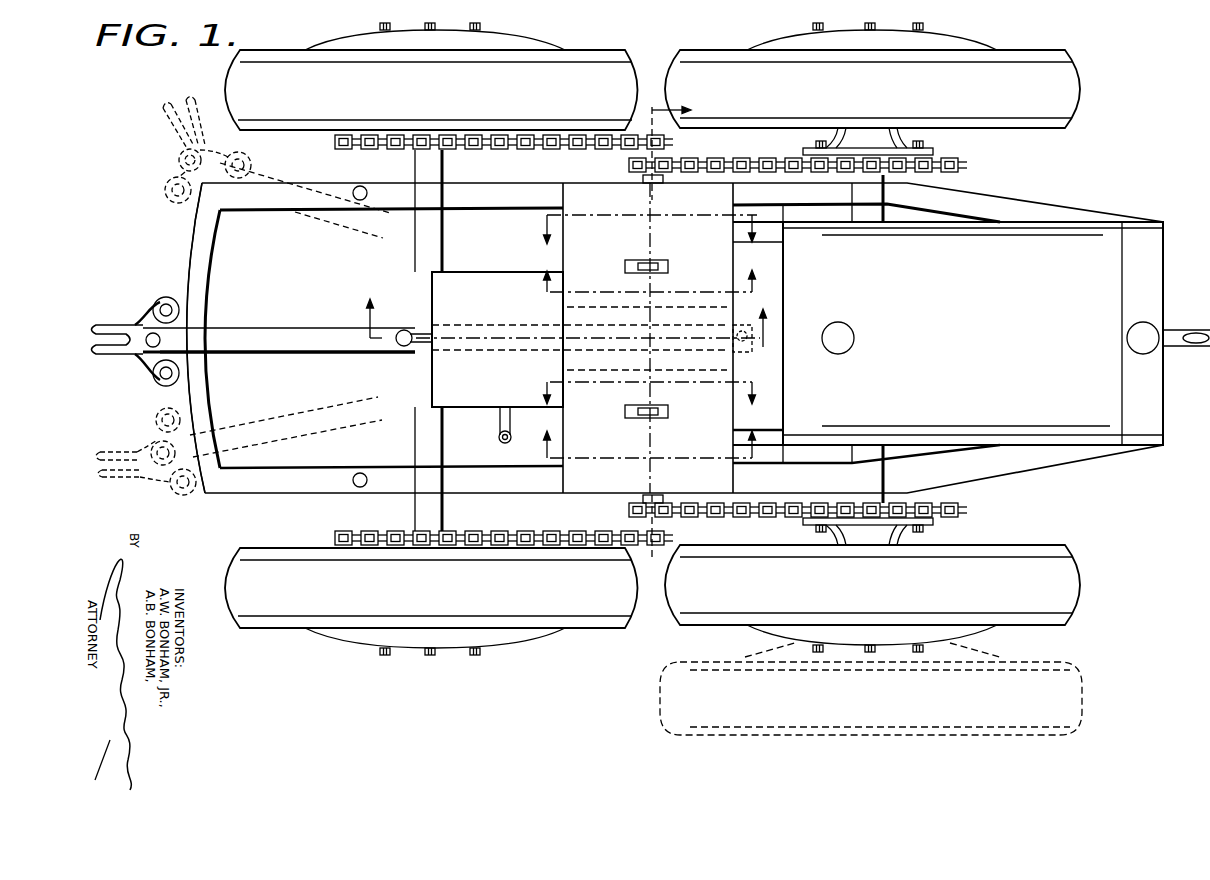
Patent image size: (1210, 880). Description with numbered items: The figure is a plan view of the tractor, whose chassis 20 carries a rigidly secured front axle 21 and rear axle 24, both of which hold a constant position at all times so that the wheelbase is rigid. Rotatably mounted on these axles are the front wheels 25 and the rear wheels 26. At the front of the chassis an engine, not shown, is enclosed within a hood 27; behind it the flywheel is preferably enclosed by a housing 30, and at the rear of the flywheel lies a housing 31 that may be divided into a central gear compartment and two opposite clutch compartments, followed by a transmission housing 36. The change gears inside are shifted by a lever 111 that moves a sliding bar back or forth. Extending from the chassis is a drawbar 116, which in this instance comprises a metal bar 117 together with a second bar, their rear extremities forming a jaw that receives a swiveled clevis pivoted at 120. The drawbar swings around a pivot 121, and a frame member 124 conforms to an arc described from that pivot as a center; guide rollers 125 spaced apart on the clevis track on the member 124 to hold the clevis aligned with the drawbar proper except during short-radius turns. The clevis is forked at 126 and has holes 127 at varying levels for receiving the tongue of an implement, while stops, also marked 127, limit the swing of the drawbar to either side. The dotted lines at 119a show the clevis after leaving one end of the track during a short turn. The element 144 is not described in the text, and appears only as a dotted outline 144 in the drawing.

The chassis 20 is at (960, 196).
The front axle 21 is at (865, 215).
The rear axle 24 is at (436, 233).
The front wheels 25 is at (872, 337).
The rear wheels 26 is at (431, 339).
The hood 27 is at (996, 333).
The flywheel housing 30 is at (782, 270).
The clutch housing 31 is at (705, 262).
The transmission housing 36 is at (485, 292).
The lever 111 is at (500, 428).
The drawbar 116 is at (295, 326).
The metal bar 117 is at (300, 345).
The clevis in dotted-line position 119a is at (180, 152).
The clevis pivot 120 is at (150, 365).
The drawbar pivot 121 is at (745, 342).
The frame member 124 is at (190, 257).
The guide rollers 125 is at (165, 297).
The fork of clevis 126 is at (105, 322).
The holes 127 is at (375, 177).
The phantom track position 144 is at (860, 730).